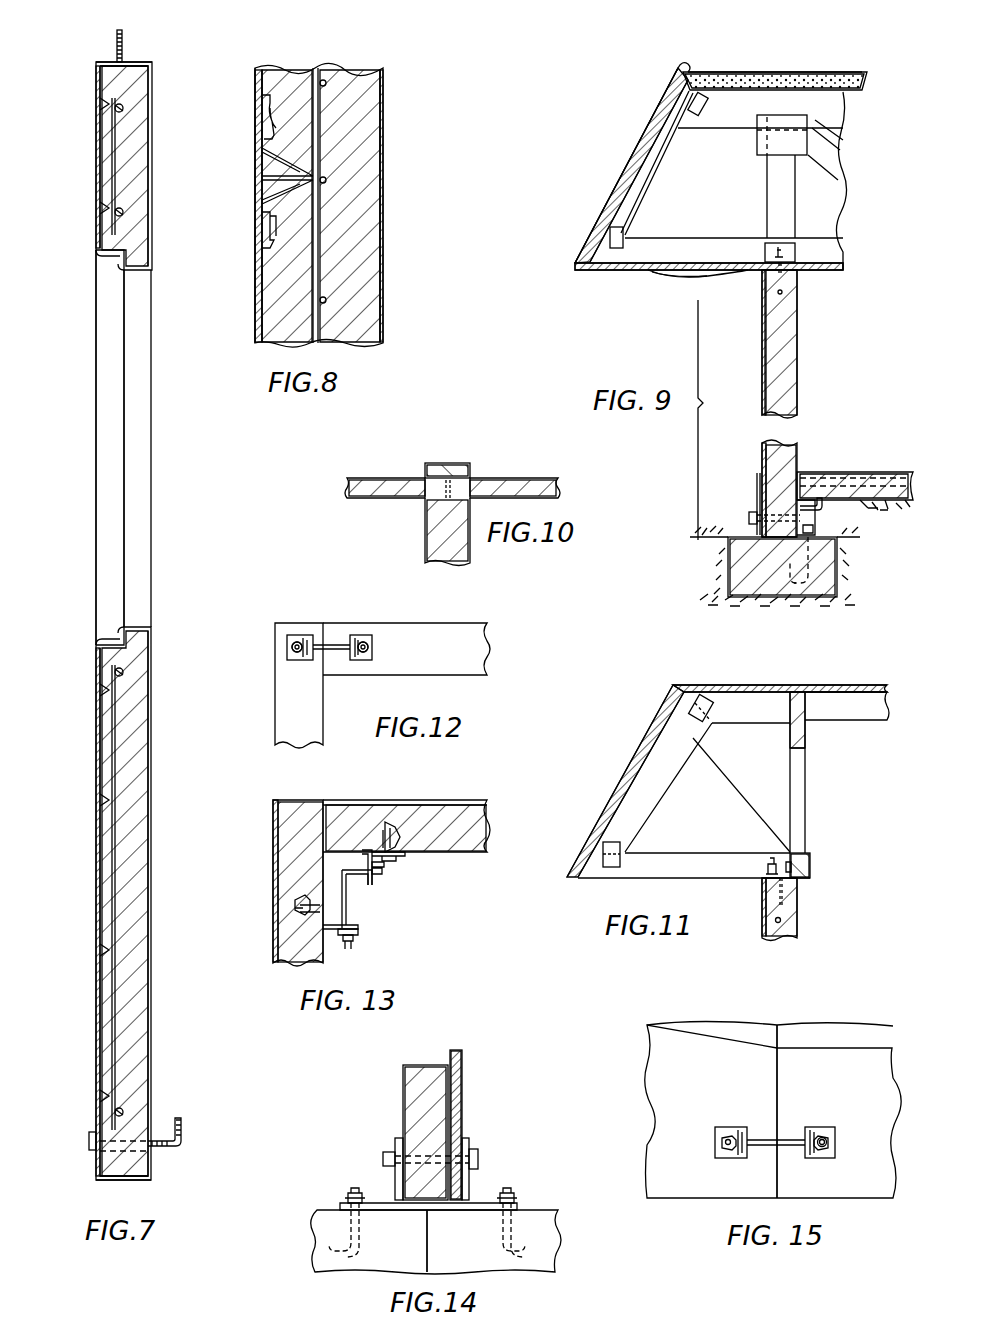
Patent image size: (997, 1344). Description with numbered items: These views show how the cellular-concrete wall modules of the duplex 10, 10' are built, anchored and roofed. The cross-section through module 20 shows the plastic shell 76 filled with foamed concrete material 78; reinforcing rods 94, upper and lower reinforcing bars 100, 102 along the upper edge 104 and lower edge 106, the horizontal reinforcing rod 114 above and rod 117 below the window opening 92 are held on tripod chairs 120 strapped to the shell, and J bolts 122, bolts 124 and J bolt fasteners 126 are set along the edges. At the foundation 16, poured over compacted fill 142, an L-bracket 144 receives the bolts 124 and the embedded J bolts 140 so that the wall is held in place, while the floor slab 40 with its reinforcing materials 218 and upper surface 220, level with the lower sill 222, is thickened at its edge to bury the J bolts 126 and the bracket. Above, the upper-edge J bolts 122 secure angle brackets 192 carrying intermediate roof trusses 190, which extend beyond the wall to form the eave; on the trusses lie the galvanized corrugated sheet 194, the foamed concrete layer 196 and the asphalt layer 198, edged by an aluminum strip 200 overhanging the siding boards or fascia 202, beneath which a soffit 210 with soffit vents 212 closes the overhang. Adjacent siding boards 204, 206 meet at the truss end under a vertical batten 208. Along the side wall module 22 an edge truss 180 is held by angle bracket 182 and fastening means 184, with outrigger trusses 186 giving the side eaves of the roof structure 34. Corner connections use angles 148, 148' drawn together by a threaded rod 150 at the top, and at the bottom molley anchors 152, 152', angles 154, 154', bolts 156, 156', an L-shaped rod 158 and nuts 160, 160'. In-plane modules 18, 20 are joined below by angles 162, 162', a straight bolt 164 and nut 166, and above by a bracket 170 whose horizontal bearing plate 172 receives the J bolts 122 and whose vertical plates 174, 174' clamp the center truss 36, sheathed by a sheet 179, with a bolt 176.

In FIG. 9, the duplex 10 is at (674, 190).
In FIG. 9, the panel structure 10' is at (597, 148).
In FIG. 9, the foundation 16 is at (748, 598).
In FIG. 9, the module 18 is at (763, 333).
In FIG. 14, the module 18 is at (462, 1244).
In FIG. 15, the module 18 is at (845, 1072).
In FIG. 7, the module 20 is at (151, 476).
In FIG. 12, the module 20 is at (272, 687).
In FIG. 13, the module 20 is at (271, 843).
In FIG. 14, the module 20 is at (412, 1244).
In FIG. 15, the module 20 is at (730, 1072).
In FIG. 11, the module 22 is at (761, 925).
In FIG. 12, the module 22 is at (448, 641).
In FIG. 13, the module 22 is at (476, 833).
In FIG. 9, the roof structure 34 is at (665, 93).
In FIG. 11, the roof structure 34 is at (657, 719).
In FIG. 14, the center truss 36 is at (404, 1090).
In FIG. 9, the floor slab 40 is at (836, 497).
In FIG. 7, the plastic shell 76 is at (100, 682).
In FIG. 8, the plastic shell 76 is at (258, 318).
In FIG. 7, the foamed concrete material 78 is at (138, 746).
In FIG. 8, the foamed concrete material 78 is at (372, 193).
In FIG. 7, the window opening 92 is at (112, 286).
In FIG. 7, the reinforcing bars or rods 94 is at (116, 856).
In FIG. 8, the reinforcing bars or rods 94 is at (322, 80).
In FIG. 7, the upper reinforcing bar 100 is at (124, 108).
In FIG. 7, the lower reinforcing bar 102 is at (124, 1112).
In FIG. 7, the upper edge 104 is at (130, 62).
In FIG. 14, the upper edge 104 is at (330, 1205).
In FIG. 7, the lower edge 106 is at (122, 1183).
In FIG. 7, the horizontal reinforcing rod 114 is at (124, 212).
In FIG. 7, the reinforcing rod 117 is at (124, 672).
In FIG. 8, the tripod chair 120 is at (262, 183).
In FIG. 7, the J bolts 122 is at (115, 45).
In FIG. 9, the J bolts 122 is at (782, 240).
In FIG. 11, the J bolts 122 is at (794, 906).
In FIG. 12, the J bolts 122 is at (288, 652).
In FIG. 14, the J bolts 122 is at (330, 1250).
In FIG. 7, the bolts 124 is at (93, 1150).
In FIG. 9, the bolts 124 is at (754, 513).
In FIG. 7, the J bolt fasteners 126 is at (181, 1132).
In FIG. 9, the J bolt fasteners 126 is at (825, 510).
In FIG. 9, the J bolts 140 is at (792, 598).
In FIG. 9, the compacted fill 142 is at (850, 588).
In FIG. 9, the L-bracket 144 is at (835, 550).
In FIG. 12, the L-shaped angle member 148 is at (302, 626).
In FIG. 12, the L-shaped angle member 148' is at (367, 670).
In FIG. 12, the bolt or threaded rod 150 is at (338, 640).
In FIG. 13, the molley anchor 152 is at (276, 893).
In FIG. 13, the molley anchor 152' is at (417, 810).
In FIG. 13, the angle member 154 is at (370, 928).
In FIG. 13, the angle member 154' is at (360, 827).
In FIG. 13, the bolt 156 is at (347, 952).
In FIG. 13, the bolt 156' is at (418, 865).
In FIG. 13, the L-shaped rod 158 is at (346, 902).
In FIG. 13, the nuts 160 is at (377, 951).
In FIG. 13, the nut 160' is at (405, 880).
In FIG. 15, the angle 162 is at (824, 1162).
In FIG. 15, the angle 162' is at (730, 1162).
In FIG. 15, the straight bolt 164 is at (765, 1135).
In FIG. 15, the nut 166 is at (822, 1135).
In FIG. 14, the bracket 170 is at (343, 1200).
In FIG. 14, the horizontal bearing plate 172 is at (510, 1207).
In FIG. 14, the vertical plate 174 is at (485, 1153).
In FIG. 14, the vertical plate 174' is at (377, 1155).
In FIG. 14, the bolt 176 is at (478, 1160).
In FIG. 14, the sheet of gypsum board, plywood or the like 179 is at (463, 1078).
In FIG. 11, the edge truss 180 is at (806, 740).
In FIG. 11, the angle bracket 182 is at (772, 876).
In FIG. 11, the fastening means 184 is at (812, 872).
In FIG. 11, the outrigger trusses 186 is at (682, 862).
In FIG. 9, the intermediate roof truss 190 is at (677, 150).
In FIG. 10, the intermediate roof truss 190 is at (432, 534).
In FIG. 9, the angle bracket 192 is at (768, 252).
In FIG. 9, the galvanized corrugated sheet 194 is at (830, 88).
In FIG. 9, the layer of filler material 196 is at (868, 80).
In FIG. 9, the asphalt layer 198 is at (790, 72).
In FIG. 9, the aluminum strip 200 is at (684, 62).
In FIG. 9, the siding boards or fascia 202 is at (611, 197).
In FIG. 9, the siding board 204 is at (608, 237).
In FIG. 10, the siding board 204 is at (520, 484).
In FIG. 10, the siding board 206 is at (382, 484).
In FIG. 9, the vertical batten 208 is at (690, 103).
In FIG. 10, the vertical batten 208 is at (450, 477).
In FIG. 9, the soffit 210 is at (605, 272).
In FIG. 9, the soffit vents 212 is at (680, 278).
In FIG. 9, the reinforcing materials 218 is at (825, 478).
In FIG. 9, the upper surface 220 is at (890, 474).
In FIG. 9, the lower sill 222 is at (762, 470).